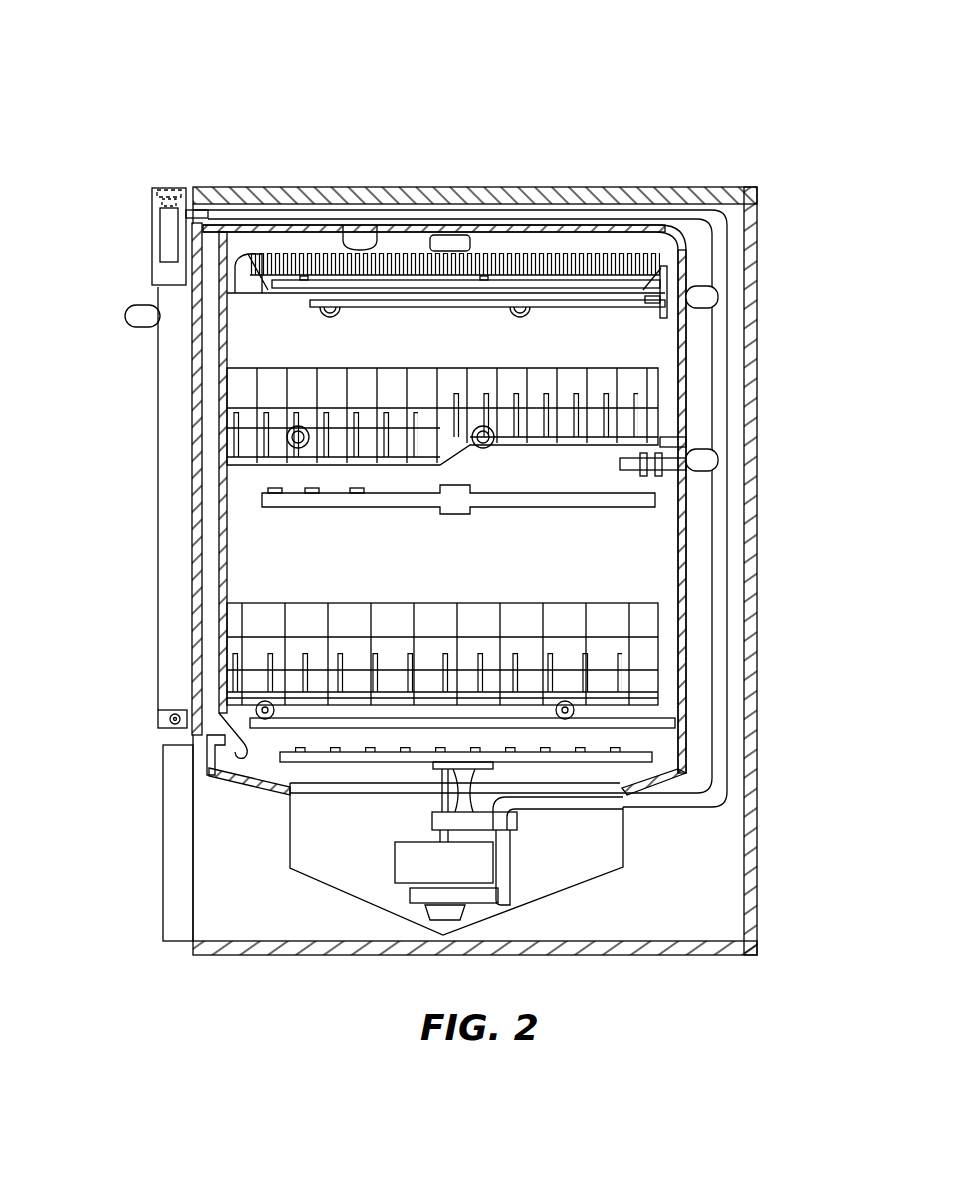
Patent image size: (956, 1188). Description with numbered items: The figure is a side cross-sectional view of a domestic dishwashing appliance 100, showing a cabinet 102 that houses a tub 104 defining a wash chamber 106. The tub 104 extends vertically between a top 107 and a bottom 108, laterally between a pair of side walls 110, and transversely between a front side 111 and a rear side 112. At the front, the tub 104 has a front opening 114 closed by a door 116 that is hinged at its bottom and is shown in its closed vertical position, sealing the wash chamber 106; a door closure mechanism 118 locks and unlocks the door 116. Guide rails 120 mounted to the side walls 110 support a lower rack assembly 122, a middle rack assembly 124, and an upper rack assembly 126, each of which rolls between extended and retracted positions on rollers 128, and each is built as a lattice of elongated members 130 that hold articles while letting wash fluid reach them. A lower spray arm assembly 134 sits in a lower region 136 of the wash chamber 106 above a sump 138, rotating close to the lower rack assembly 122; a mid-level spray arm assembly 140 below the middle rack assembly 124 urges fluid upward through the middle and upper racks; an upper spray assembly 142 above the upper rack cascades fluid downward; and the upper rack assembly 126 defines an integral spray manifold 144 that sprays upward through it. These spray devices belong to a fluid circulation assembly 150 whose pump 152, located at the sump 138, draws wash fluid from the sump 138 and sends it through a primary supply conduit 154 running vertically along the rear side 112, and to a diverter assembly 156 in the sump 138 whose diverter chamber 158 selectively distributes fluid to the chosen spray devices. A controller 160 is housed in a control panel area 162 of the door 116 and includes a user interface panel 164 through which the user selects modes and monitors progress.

The dishwashing appliance 100 is at (502, 480).
The cabinet 102 is at (758, 236).
The tub 104 is at (244, 793).
The wash chamber 106 is at (264, 547).
The top 107 is at (356, 246).
The bottom 108 is at (669, 760).
The side walls 110 is at (409, 242).
The front side 111 is at (230, 244).
The rear side 112 is at (661, 344).
The front opening 114 is at (190, 232).
The door 116 is at (160, 602).
The door closure mechanism 118 is at (256, 212).
The guide rails 120 is at (288, 370).
The lower rack assembly 122 is at (583, 591).
The middle rack assembly 124 is at (258, 347).
The upper rack assembly 126 is at (392, 248).
The rollers 128 is at (325, 314).
The elongated members 130 is at (642, 402).
The lower spray arm assembly 134 is at (586, 757).
The lower region 136 is at (668, 718).
The sump 138 is at (292, 818).
The mid-level spray arm assembly 140 is at (482, 502).
The upper spray assembly 142 is at (483, 290).
The integral spray manifold 144 is at (592, 270).
The fluid circulation assembly 150 is at (451, 845).
The pump 152 is at (478, 857).
The primary supply conduit 154 is at (718, 615).
The diverter assembly 156 is at (427, 820).
The diverter chamber 158 is at (520, 820).
The controller 160 is at (160, 233).
The control panel area 162 is at (165, 183).
The user interface panel 164 is at (179, 186).